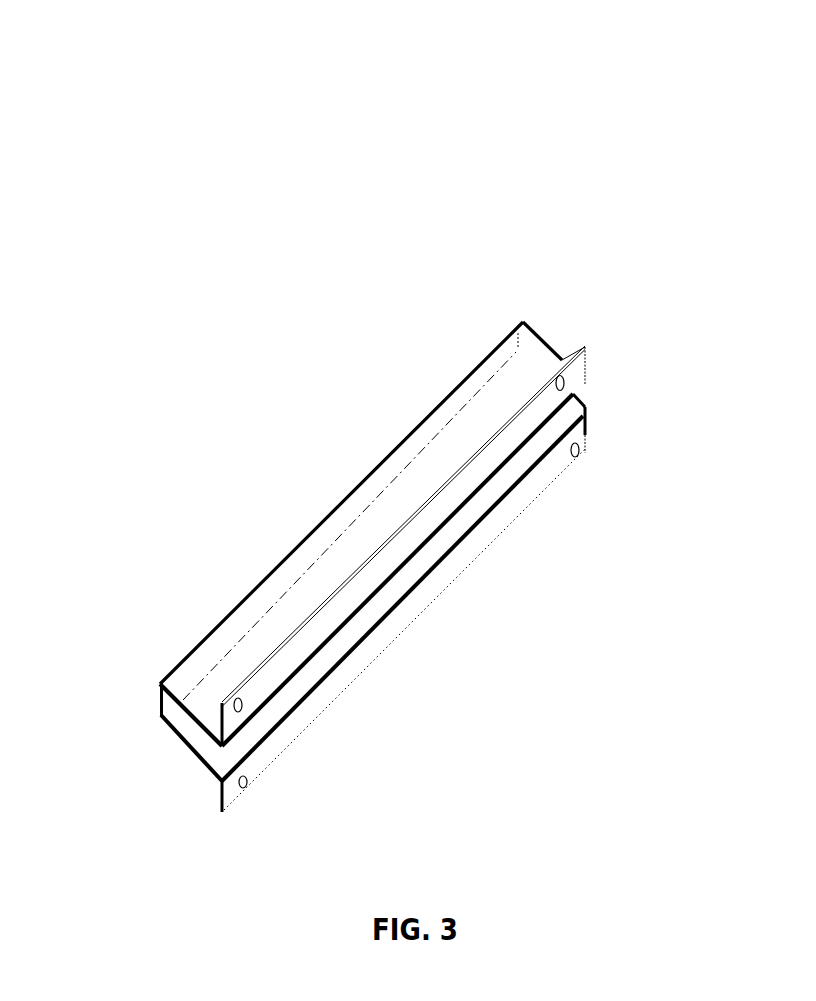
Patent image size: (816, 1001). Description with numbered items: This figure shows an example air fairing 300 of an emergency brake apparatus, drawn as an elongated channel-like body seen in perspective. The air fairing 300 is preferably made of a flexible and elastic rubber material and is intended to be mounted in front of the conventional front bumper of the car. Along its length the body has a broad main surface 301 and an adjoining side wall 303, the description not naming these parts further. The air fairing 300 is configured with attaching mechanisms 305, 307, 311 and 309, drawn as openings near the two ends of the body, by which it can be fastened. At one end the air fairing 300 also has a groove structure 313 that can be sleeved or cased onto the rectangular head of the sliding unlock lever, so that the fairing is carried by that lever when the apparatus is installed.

The air fairing 300 is at (556, 96).
The base plate 301 is at (452, 445).
The upstanding side wall 303 is at (508, 443).
The attaching mechanism 305 is at (588, 384).
The attaching mechanism 307 is at (579, 452).
The attaching mechanism 309 is at (247, 781).
The attaching mechanism 311 is at (235, 702).
The groove structure 313 is at (156, 707).